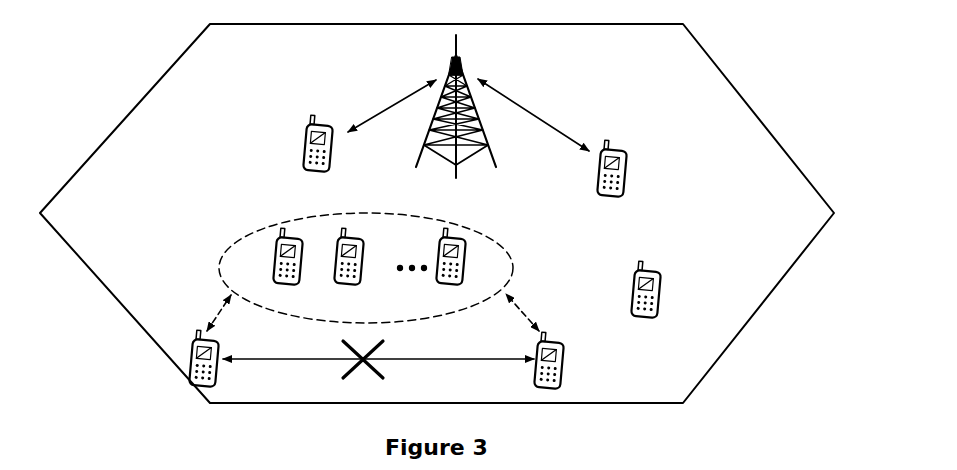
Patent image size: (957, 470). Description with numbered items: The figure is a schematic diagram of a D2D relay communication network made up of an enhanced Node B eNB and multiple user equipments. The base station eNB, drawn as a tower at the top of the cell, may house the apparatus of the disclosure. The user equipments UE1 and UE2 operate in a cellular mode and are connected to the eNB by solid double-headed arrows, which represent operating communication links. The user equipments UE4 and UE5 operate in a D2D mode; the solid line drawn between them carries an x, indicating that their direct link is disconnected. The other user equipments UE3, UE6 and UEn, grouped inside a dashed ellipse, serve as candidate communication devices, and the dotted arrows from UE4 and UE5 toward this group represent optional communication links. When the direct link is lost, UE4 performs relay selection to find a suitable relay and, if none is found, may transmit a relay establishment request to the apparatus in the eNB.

The enhanced Node B eNB is at (451, 106).
The user equipment UE1 is at (298, 143).
The user equipment UE2 is at (641, 168).
The user equipment UE3 is at (291, 269).
The user equipment UE4 is at (189, 352).
The user equipment UE5 is at (577, 360).
The user equipment UE6 is at (354, 269).
The user equipment UEn is at (453, 269).